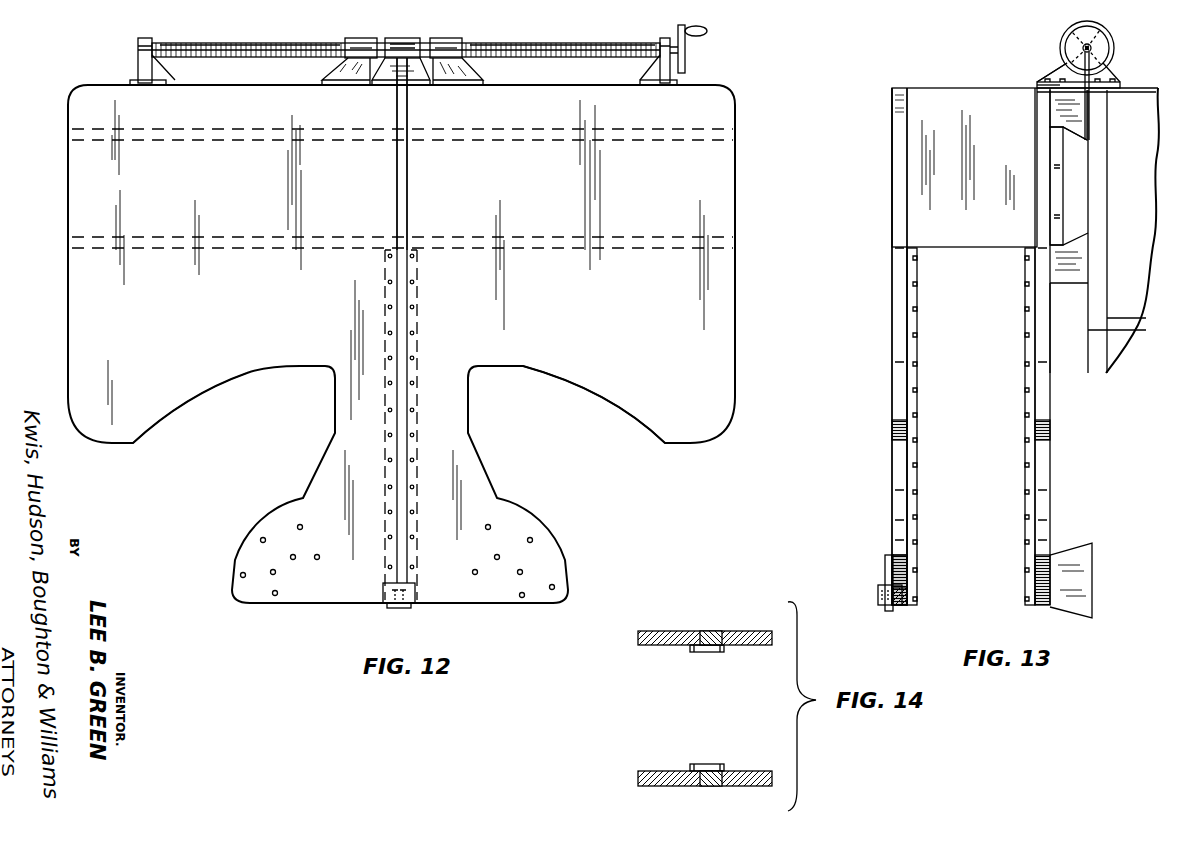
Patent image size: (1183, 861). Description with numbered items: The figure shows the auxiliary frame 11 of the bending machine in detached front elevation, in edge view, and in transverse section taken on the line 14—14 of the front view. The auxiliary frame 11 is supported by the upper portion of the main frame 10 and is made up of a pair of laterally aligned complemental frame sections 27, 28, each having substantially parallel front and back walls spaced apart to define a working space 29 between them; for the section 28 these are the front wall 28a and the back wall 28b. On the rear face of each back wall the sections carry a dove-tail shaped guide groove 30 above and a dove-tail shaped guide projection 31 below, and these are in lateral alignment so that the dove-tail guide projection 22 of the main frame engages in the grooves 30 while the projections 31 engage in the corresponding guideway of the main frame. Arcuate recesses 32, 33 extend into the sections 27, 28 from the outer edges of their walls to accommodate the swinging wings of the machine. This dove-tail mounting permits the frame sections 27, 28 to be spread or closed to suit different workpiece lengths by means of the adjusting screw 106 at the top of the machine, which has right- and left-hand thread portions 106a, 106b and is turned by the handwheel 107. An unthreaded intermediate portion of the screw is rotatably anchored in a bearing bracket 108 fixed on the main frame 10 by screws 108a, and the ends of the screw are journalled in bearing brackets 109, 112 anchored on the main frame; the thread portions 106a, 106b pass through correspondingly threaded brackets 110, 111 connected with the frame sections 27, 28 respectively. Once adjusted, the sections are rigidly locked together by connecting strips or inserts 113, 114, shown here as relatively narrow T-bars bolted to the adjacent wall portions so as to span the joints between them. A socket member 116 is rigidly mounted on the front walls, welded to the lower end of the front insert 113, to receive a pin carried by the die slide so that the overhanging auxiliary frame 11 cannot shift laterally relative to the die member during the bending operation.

In FIG. 13, the main frame 10 is at (1138, 88).
In FIG. 13, the auxiliary frame 11 is at (962, 76).
In FIG. 12, the rocker member 14 is at (498, 403).
In FIG. 13, the guide projection 22 is at (1070, 150).
In FIG. 12, the frame section 27 is at (68, 312).
In FIG. 12, the frame section 28 is at (735, 277).
In FIG. 13, the front wall 28a is at (892, 328).
In FIG. 13, the back wall 28b is at (1050, 348).
In FIG. 13, the working space 29 is at (895, 431).
In FIG. 12, the guide groove 30 is at (122, 240).
In FIG. 13, the guide groove 30 is at (1070, 125).
In FIG. 13, the guide projection 31 is at (1085, 556).
In FIG. 12, the recess 32 is at (243, 374).
In FIG. 12, the recess 33 is at (562, 392).
In FIG. 12, the adjusting screw 106 is at (548, 40).
In FIG. 12, the right-hand thread portion 106a is at (230, 26).
In FIG. 12, the left-hand thread portion 106b is at (623, 40).
In FIG. 12, the handwheel 107 is at (686, 62).
In FIG. 13, the handwheel 107 is at (1060, 45).
In FIG. 12, the bearing bracket 108 is at (412, 32).
In FIG. 13, the bearing bracket 108 is at (1095, 75).
In FIG. 12, the screws 108a is at (392, 75).
In FIG. 13, the screws 108a is at (1110, 78).
In FIG. 12, the bearing bracket 109 is at (140, 44).
In FIG. 13, the bearing bracket 109 is at (1112, 40).
In FIG. 12, the threaded bracket 110 is at (358, 36).
In FIG. 13, the threaded bracket 110 is at (1048, 66).
In FIG. 12, the threaded bracket 111 is at (445, 36).
In FIG. 13, the threaded bracket 111 is at (1040, 76).
In FIG. 12, the bearing bracket 112 is at (663, 38).
In FIG. 13, the bearing bracket 112 is at (1118, 57).
In FIG. 12, the connecting strip or insert 113 is at (410, 350).
In FIG. 13, the connecting strip or insert 113 is at (908, 478).
In FIG. 14, the connecting strip or insert 113 is at (705, 764).
In FIG. 13, the connecting strip or insert 114 is at (1030, 478).
In FIG. 14, the connecting strip or insert 114 is at (700, 652).
In FIG. 12, the socket member 116 is at (400, 608).
In FIG. 13, the socket member 116 is at (886, 610).